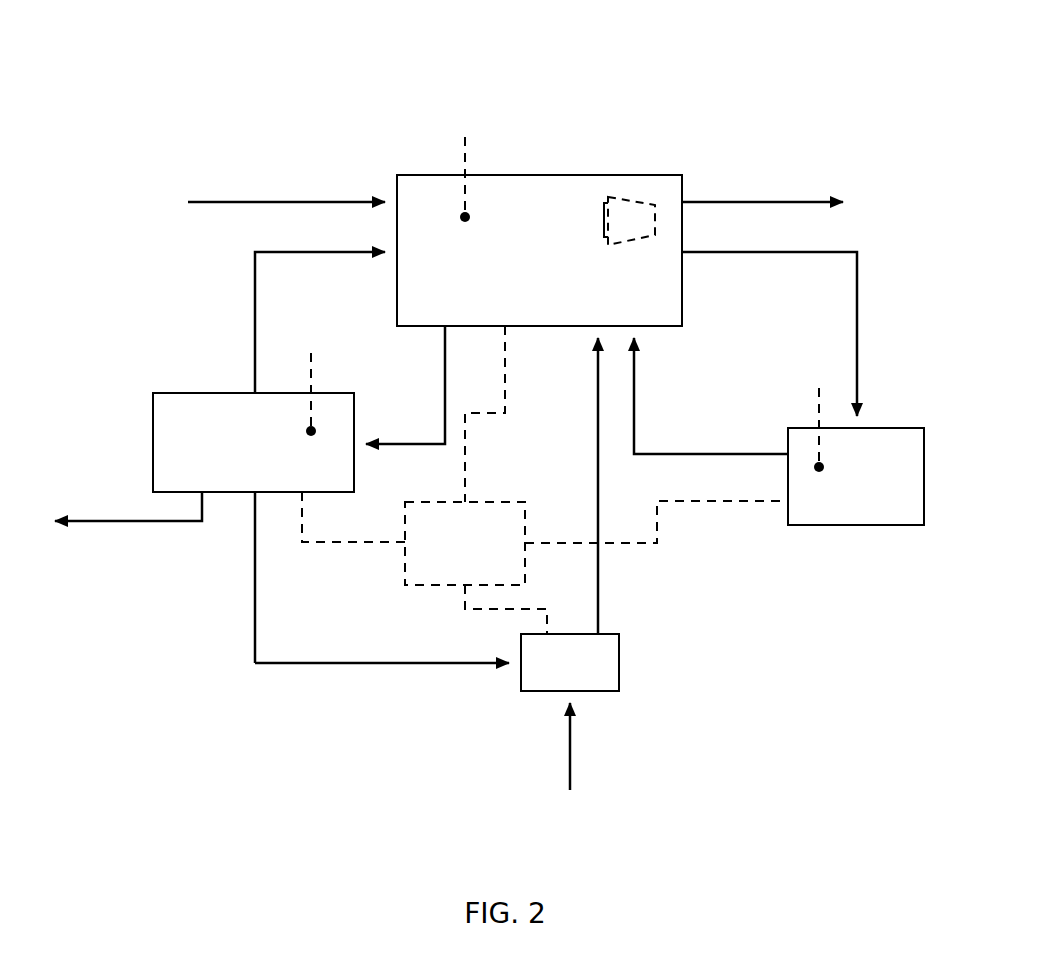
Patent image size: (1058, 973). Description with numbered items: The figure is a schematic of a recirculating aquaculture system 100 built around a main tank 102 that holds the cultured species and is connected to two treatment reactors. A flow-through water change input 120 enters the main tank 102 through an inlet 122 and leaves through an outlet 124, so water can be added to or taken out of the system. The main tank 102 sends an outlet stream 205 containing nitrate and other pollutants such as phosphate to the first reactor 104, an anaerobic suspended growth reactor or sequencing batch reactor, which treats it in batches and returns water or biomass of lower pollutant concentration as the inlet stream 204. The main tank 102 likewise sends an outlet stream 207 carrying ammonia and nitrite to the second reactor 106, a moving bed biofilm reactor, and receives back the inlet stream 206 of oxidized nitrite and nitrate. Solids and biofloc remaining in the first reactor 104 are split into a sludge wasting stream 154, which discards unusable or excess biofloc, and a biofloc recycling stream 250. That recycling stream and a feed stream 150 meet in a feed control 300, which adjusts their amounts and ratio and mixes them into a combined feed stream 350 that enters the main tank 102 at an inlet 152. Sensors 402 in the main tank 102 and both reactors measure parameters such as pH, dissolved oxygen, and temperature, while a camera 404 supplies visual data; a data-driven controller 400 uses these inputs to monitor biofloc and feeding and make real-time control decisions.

The recirculating aquaculture system 100 is at (195, 62).
The main tank 102 is at (539, 250).
The first reactor 104 is at (253, 442).
The second reactor 106 is at (856, 476).
The flow-through water change input 120 is at (278, 202).
The inlet 122 is at (385, 165).
The outlet 124 is at (695, 177).
The feed stream 150 is at (568, 740).
The inlet 152 is at (583, 340).
The sludge wasting stream 154 is at (177, 521).
The inlet stream 204 is at (255, 363).
The outlet stream 205 is at (413, 444).
The inlet stream 206 is at (713, 454).
The outlet stream 207 is at (858, 274).
The biofloc recycling stream 250 is at (357, 663).
The feed control 300 is at (570, 662).
The combined feed stream 350 is at (597, 448).
The data-driven controller 400 is at (545, 480).
The sensors 402 is at (466, 153).
The cameras 404 is at (632, 198).